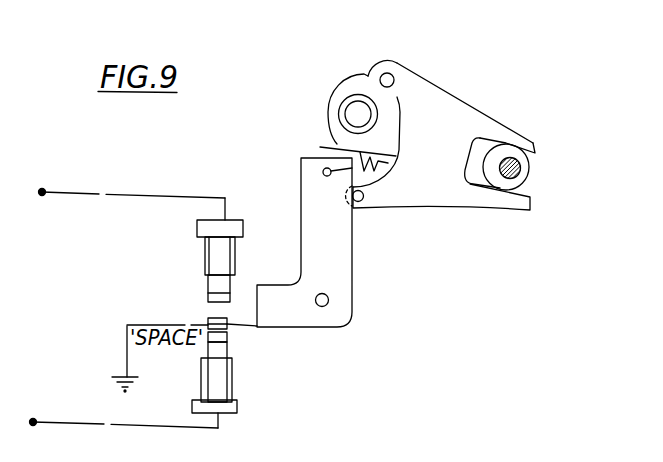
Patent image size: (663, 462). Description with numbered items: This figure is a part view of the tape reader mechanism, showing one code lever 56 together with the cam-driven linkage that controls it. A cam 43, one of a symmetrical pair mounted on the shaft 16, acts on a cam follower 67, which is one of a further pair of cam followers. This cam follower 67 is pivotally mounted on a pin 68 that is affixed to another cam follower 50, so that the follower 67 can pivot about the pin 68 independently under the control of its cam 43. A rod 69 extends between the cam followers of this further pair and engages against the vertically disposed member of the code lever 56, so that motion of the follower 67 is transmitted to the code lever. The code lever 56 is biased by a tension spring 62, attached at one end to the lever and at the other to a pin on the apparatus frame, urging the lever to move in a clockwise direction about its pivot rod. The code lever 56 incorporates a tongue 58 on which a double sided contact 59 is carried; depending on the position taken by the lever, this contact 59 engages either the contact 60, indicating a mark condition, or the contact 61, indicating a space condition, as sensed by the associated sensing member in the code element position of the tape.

The cam follower 50 is at (363, 78).
The pin 68 is at (392, 75).
The cam follower 67 is at (430, 99).
The cam 43 is at (523, 162).
The shaft 16 is at (512, 172).
The tension spring 62 is at (346, 148).
The code lever 56 is at (313, 182).
The rod 69 is at (361, 203).
The contact 60 is at (229, 296).
The tongue 58 is at (242, 325).
The double sided contact 59 is at (228, 332).
The contact 61 is at (209, 336).